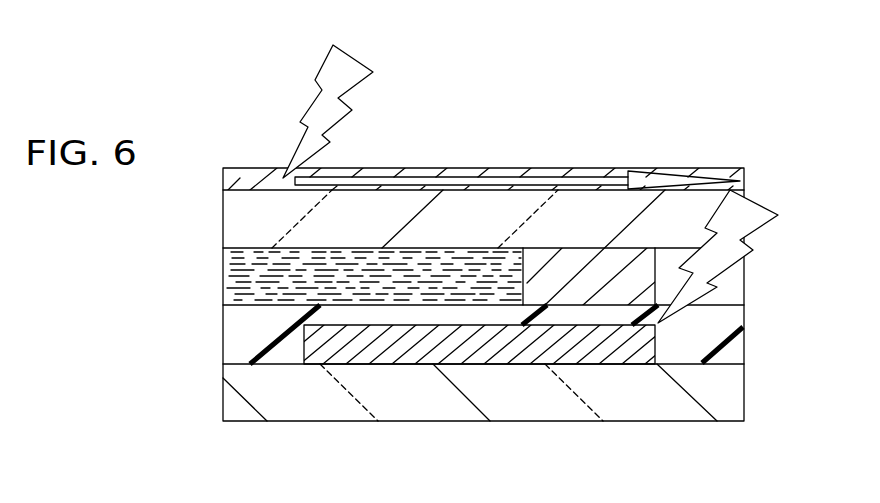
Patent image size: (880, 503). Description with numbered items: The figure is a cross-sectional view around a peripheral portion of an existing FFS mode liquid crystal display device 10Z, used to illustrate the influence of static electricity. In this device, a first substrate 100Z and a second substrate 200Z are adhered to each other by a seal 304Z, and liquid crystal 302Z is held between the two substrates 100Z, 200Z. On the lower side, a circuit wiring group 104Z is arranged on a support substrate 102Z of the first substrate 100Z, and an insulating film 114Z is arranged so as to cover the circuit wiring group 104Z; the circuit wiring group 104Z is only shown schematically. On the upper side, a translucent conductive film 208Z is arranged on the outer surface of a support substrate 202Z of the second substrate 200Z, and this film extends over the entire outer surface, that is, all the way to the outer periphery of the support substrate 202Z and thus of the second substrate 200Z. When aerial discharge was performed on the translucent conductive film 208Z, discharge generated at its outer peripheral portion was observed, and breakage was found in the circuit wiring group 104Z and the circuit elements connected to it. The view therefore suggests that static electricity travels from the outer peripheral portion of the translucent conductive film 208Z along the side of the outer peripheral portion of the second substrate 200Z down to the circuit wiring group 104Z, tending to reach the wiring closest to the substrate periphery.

The FFS mode liquid crystal display device 10Z is at (613, 104).
The first substrate 100Z is at (485, 400).
The support substrate 102Z is at (243, 403).
The circuit wiring group 104Z is at (408, 355).
The insulating film 114Z is at (730, 322).
The second substrate 200Z is at (449, 158).
The support substrate 202Z is at (240, 226).
The translucent conductive film 208Z is at (259, 178).
The liquid crystal 302Z is at (224, 278).
The seal 304Z is at (567, 293).